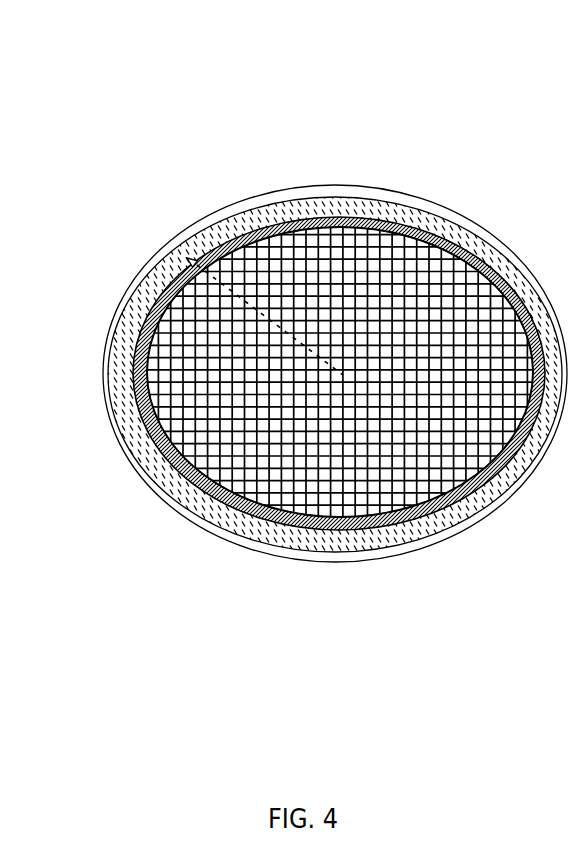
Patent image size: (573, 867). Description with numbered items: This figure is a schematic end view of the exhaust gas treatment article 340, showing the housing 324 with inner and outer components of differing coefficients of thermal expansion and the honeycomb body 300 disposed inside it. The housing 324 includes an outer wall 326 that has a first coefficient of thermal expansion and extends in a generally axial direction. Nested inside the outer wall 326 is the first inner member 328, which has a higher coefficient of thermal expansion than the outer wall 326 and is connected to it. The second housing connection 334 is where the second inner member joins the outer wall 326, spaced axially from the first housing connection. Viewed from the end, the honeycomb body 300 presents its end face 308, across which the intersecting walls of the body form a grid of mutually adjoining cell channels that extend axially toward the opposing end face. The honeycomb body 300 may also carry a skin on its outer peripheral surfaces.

The filter assembly 340 is at (298, 322).
The housing 324 is at (298, 381).
The outer wall 326 is at (418, 548).
The first inner member 328 is at (418, 218).
The second housing connection 334 is at (252, 517).
The honeycomb body 300 is at (202, 423).
The end face 308 is at (280, 283).